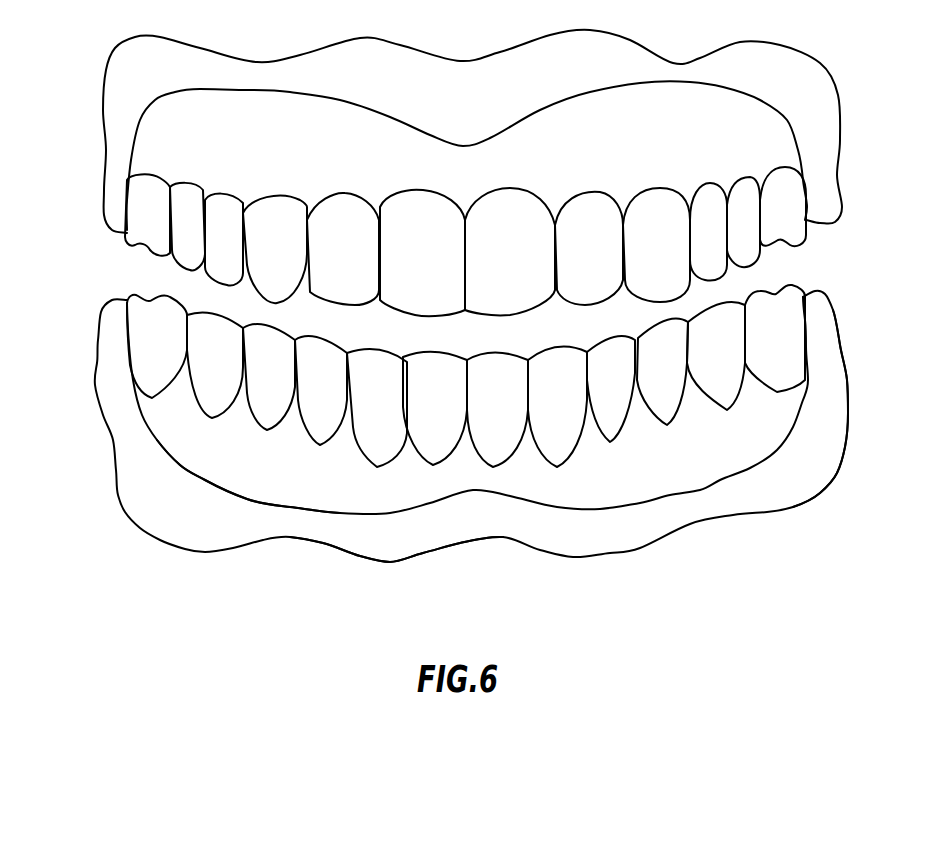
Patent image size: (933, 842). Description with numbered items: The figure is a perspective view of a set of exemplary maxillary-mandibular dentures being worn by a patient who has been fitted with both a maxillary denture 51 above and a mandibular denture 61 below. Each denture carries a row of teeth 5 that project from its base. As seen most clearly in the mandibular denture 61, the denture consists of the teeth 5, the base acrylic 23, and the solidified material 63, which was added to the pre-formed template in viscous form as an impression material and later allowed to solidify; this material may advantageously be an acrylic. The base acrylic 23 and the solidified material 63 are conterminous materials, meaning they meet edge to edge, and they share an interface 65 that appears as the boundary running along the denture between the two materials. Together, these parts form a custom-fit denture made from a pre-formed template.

The teeth 5 is at (425, 277).
The maxillary denture 51 is at (664, 151).
The base acrylic 23 is at (671, 481).
The mandibular denture 61 is at (810, 475).
The solidified material 63 is at (410, 540).
The interface 65 is at (287, 505).